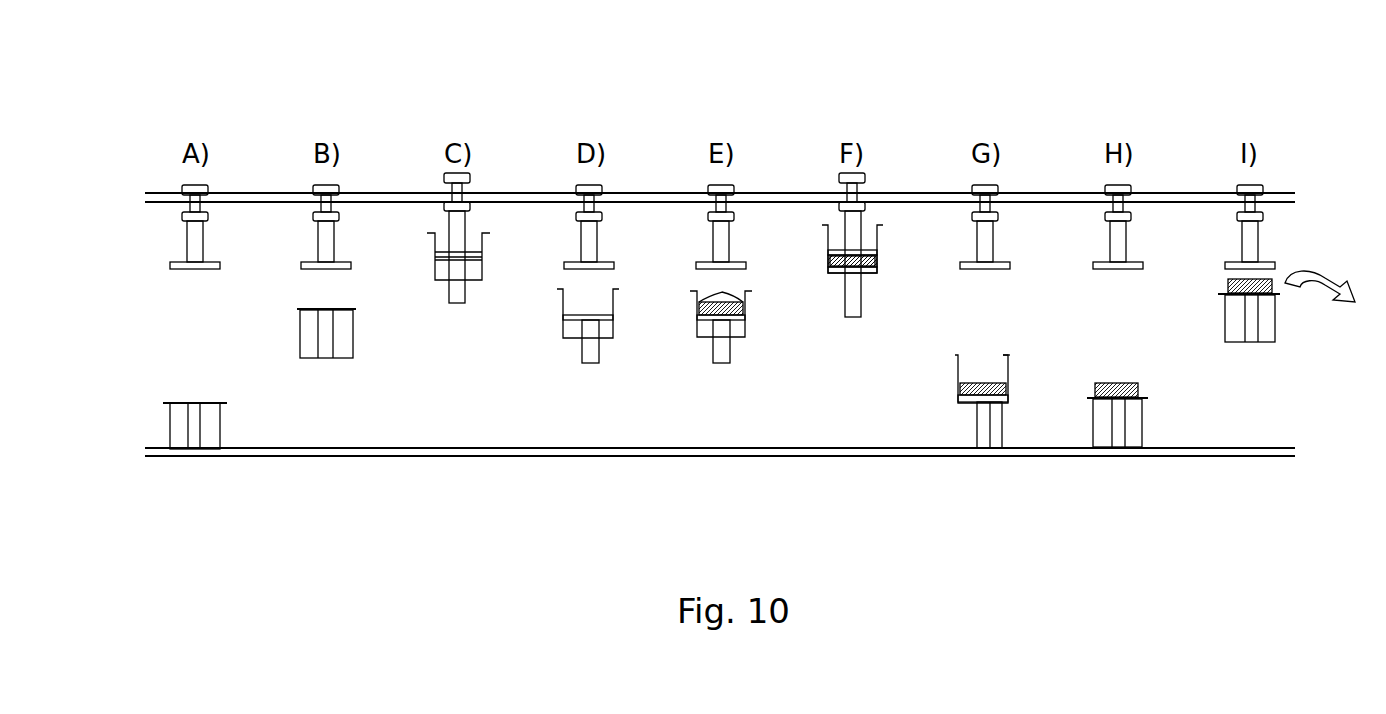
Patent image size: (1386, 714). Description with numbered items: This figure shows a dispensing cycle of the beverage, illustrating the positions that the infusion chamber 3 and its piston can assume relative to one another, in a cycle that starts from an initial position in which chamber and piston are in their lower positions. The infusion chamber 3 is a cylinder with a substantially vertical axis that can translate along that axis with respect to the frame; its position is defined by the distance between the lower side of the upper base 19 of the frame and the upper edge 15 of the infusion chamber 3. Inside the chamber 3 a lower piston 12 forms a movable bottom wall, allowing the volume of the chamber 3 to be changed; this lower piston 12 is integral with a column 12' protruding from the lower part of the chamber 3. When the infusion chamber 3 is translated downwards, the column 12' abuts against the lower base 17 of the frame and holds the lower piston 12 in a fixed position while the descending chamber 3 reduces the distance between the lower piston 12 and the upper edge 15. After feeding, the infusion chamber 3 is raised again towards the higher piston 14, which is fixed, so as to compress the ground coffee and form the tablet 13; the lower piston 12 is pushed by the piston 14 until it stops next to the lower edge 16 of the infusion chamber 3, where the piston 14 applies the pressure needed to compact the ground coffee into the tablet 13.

The infusion chamber 3 is at (170, 423).
The lower piston 12 is at (540, 314).
The column 12' is at (771, 428).
The coffee tablet 13 is at (960, 395).
The higher piston 14 is at (176, 223).
The upper edge 15 is at (217, 402).
The lower edge 16 is at (705, 337).
The lower base 17 is at (367, 458).
The upper base 19 is at (277, 193).